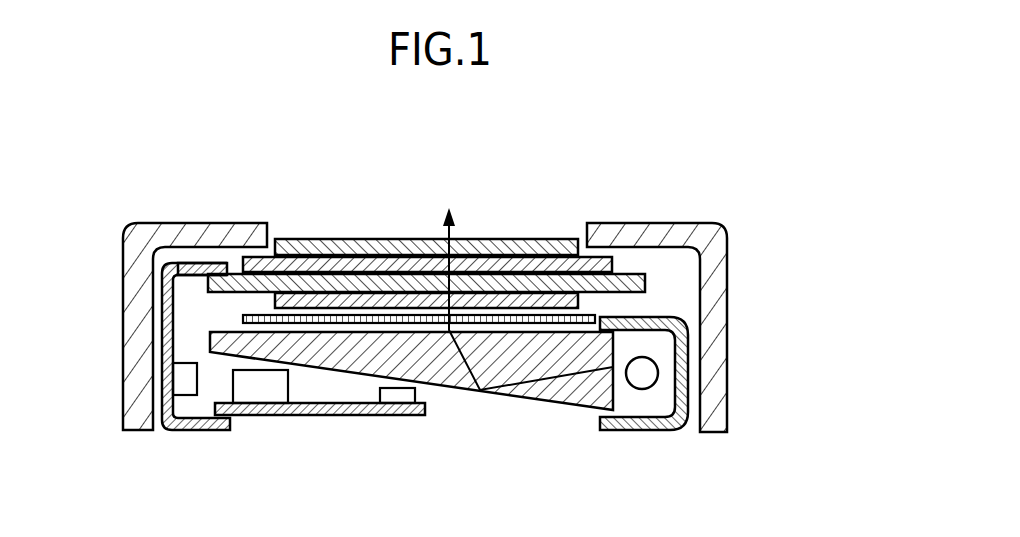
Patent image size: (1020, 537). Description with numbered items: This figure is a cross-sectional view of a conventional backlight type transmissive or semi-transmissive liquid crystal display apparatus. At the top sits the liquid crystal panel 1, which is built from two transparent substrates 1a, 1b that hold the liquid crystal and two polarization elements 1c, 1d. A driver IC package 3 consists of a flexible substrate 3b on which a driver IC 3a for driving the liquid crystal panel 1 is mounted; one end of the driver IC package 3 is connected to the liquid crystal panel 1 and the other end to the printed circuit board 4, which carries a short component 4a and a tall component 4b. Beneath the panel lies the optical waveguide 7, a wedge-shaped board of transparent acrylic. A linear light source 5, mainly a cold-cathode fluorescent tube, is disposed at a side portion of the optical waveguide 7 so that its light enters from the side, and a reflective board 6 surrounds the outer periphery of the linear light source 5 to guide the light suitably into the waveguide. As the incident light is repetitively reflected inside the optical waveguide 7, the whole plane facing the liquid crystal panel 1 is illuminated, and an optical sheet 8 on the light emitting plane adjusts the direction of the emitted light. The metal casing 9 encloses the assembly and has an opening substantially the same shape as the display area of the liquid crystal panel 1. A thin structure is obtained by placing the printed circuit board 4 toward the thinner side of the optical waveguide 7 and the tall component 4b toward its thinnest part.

The liquid crystal panel 1 is at (517, 248).
The transparent substrate 1a is at (612, 267).
The transparent substrate 1b is at (645, 283).
The polarization element 1c is at (550, 239).
The polarization element 1d is at (578, 297).
The driver IC package 3 is at (155, 333).
The driver IC 3a is at (188, 263).
The flexible substrate 3b is at (173, 380).
The printed circuit board 4 is at (440, 421).
The short component 4a is at (397, 403).
The tall component 4b is at (260, 403).
The linear light source 5 is at (648, 372).
The reflective board 6 is at (655, 430).
The optical waveguide 7 is at (572, 388).
The optical sheet 8 is at (502, 390).
The metal casing 9 is at (140, 223).